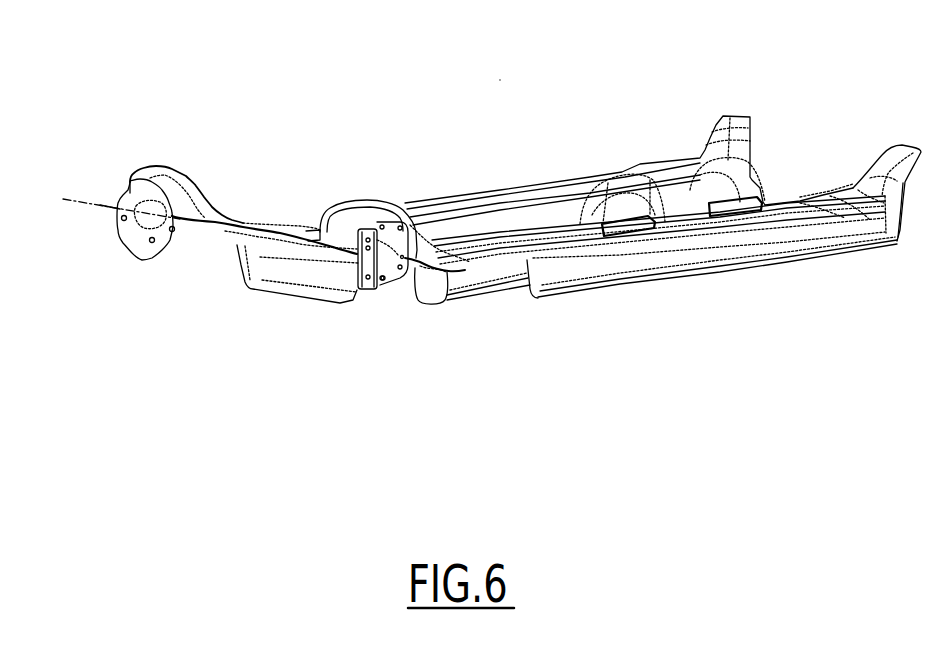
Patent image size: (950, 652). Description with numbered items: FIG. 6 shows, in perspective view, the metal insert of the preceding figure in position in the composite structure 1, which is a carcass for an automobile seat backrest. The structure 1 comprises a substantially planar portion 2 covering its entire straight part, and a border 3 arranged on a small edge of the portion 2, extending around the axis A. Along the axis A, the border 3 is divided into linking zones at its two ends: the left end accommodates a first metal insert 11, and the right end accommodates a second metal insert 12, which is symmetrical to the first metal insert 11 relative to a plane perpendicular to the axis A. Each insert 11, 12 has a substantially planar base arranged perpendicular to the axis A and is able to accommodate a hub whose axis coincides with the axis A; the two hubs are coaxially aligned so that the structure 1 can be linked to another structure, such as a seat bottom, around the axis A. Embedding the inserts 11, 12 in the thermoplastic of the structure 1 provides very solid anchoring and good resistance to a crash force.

The composite structure 1 is at (461, 46).
The portion 2 is at (579, 210).
The border 3 is at (217, 195).
The first metal insert 11 is at (109, 242).
The second metal insert 12 is at (435, 285).
The axis A is at (63, 244).